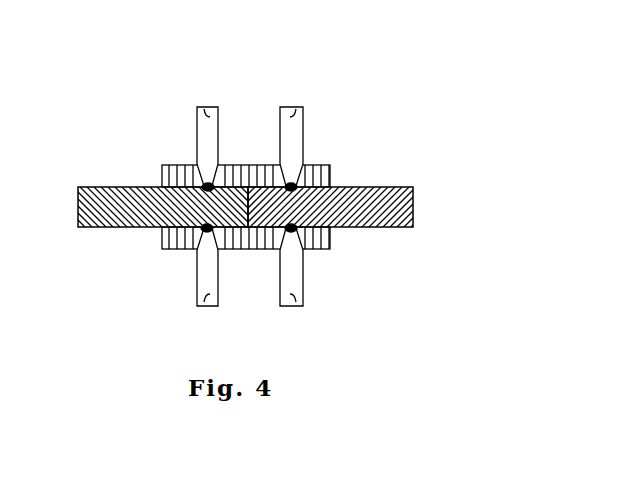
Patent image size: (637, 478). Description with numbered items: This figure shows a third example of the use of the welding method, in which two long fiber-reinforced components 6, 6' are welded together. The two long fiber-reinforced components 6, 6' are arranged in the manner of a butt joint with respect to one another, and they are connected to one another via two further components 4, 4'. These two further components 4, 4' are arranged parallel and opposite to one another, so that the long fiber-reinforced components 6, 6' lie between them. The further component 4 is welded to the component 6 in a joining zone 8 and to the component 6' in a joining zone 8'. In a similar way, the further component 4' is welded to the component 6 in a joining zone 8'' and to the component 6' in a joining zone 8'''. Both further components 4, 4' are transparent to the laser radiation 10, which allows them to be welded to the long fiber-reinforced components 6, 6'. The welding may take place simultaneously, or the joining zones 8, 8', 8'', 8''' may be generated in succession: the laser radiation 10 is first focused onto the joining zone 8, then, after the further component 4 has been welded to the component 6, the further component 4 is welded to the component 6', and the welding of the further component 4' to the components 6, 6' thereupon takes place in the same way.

The further component 4 is at (274, 153).
The further component 4' is at (268, 260).
The long fiber-reinforced component 6 is at (159, 234).
The long fiber-reinforced component 6' is at (334, 231).
The joining zone 8 is at (164, 157).
The joining zone 8' is at (345, 172).
The joining zone 8'' is at (171, 264).
The joining zone 8''' is at (319, 272).
The laser radiation 10 is at (283, 104).